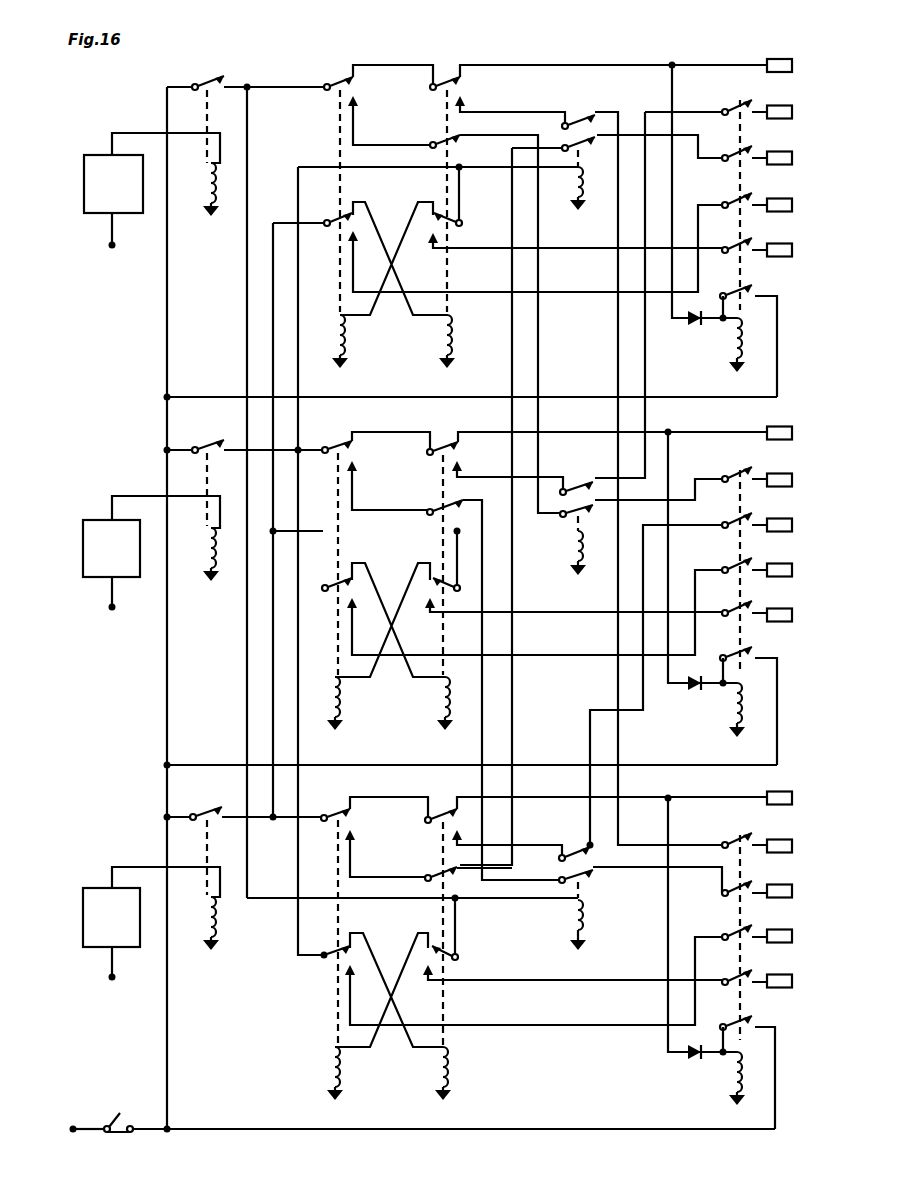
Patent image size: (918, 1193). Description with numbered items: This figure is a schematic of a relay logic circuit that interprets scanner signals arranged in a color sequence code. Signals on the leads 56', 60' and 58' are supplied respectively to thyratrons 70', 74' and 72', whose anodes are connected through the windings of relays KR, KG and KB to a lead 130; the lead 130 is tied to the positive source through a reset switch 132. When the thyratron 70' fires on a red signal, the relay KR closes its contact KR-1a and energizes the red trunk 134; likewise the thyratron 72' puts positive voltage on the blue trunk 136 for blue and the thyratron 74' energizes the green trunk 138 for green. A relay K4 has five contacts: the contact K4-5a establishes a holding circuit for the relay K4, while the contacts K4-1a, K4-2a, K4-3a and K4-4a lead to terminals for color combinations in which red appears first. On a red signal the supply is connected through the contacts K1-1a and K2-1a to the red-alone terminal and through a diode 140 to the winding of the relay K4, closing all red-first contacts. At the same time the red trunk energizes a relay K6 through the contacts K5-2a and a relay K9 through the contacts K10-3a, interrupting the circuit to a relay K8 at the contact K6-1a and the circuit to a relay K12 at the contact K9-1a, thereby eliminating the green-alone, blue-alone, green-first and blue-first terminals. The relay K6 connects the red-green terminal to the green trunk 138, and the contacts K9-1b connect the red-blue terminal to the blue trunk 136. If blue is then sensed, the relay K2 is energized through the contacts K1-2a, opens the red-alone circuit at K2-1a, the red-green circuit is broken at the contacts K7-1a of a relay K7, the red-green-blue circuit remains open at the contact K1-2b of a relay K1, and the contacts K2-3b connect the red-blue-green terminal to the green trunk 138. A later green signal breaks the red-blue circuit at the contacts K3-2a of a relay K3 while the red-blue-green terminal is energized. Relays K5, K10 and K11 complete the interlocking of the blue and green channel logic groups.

The thyratron 70' is at (98, 170).
The lead 56' is at (82, 231).
The thyratron 74' is at (97, 532).
The lead 60' is at (88, 594).
The thyratron 72' is at (95, 905).
The lead 58' is at (80, 964).
The lead 130 is at (168, 624).
The red trunk 134 is at (246, 653).
The blue trunk 136 is at (272, 667).
The green trunk 138 is at (297, 695).
The reset switch 132 is at (121, 1115).
The diode 140 is at (692, 328).
The relay KR is at (166, 153).
The contact KR-1a is at (227, 80).
The relay KG is at (166, 517).
The relay KB is at (166, 885).
The relay K1 is at (336, 330).
The contact K1-1a is at (352, 74).
The contact K1-2a is at (352, 210).
The contact K1-2b is at (350, 236).
The relay K2 is at (450, 330).
The contact K2-1a is at (460, 74).
The contact K2-3b is at (442, 238).
The relay K3 is at (591, 183).
The contact K3-2a is at (596, 134).
The relay K4 is at (742, 338).
The contact K4-1a is at (762, 96).
The contact K4-2a is at (770, 141).
The contact K4-3a is at (770, 186).
The contact K4-4a is at (770, 233).
The contact K4-5a is at (770, 279).
The relay K5 is at (333, 708).
The contact K5-2a is at (350, 576).
The relay K6 is at (449, 705).
The contact K6-1a is at (456, 440).
The relay K7 is at (582, 555).
The contact K7-1a is at (592, 486).
The relay K8 is at (742, 705).
The relay K9 is at (330, 1070).
The contact K9-1a is at (349, 806).
The contact K9-1b is at (358, 832).
The relay K10 is at (450, 1068).
The contact K10-3a is at (428, 944).
The relay K11 is at (583, 920).
The relay K12 is at (738, 1075).